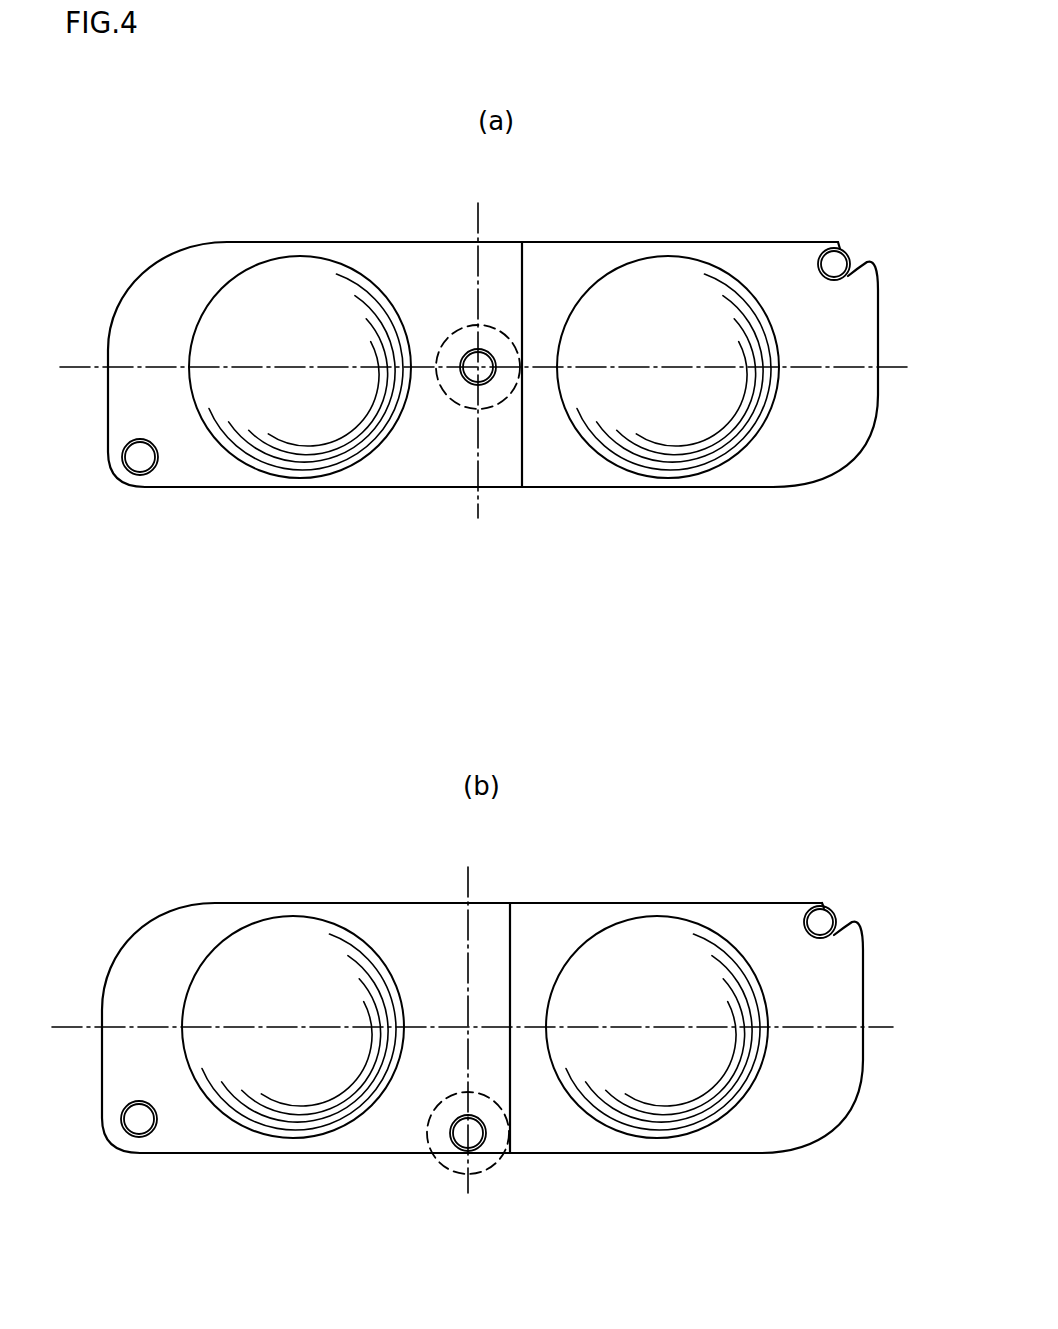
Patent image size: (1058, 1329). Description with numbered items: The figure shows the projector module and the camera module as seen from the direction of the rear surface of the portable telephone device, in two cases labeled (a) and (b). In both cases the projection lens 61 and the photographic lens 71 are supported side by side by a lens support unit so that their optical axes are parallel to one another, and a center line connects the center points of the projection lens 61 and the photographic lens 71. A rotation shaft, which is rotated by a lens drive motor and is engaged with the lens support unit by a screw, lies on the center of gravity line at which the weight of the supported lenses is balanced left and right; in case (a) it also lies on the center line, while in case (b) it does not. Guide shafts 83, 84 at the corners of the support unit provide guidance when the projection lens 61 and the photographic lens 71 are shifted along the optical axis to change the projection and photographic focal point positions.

The projection lens 61 is at (272, 258).
The photographic lens 71 is at (705, 259).
The guide shaft 83 is at (135, 477).
The guide shaft 84 is at (851, 253).